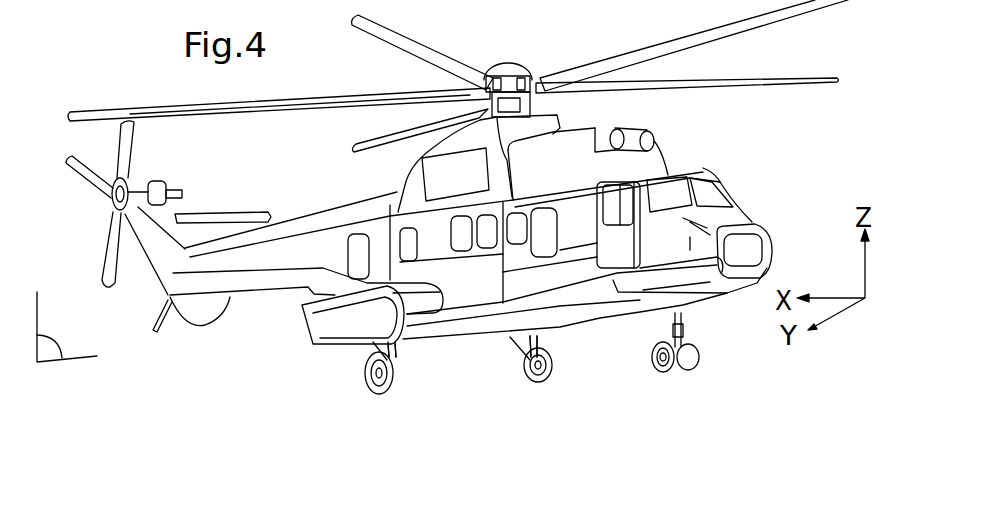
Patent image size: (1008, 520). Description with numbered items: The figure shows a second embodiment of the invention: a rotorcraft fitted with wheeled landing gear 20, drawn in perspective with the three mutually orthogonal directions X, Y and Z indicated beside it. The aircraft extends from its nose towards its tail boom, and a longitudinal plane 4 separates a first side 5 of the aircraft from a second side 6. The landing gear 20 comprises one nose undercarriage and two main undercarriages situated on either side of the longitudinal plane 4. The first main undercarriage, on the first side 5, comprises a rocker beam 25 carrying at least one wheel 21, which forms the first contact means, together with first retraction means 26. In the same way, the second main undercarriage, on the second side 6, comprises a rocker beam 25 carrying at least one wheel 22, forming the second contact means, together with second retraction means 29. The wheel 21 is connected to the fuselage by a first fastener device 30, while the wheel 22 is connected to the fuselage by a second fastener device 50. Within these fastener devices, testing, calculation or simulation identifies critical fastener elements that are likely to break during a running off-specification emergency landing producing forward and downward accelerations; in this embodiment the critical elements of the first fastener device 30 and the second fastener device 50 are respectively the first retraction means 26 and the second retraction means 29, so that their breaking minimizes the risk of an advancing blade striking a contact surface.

The longitudinal plane 4 is at (37, 312).
The first side 5 is at (780, 203).
The second side 6 is at (324, 391).
The landing gear 20 is at (632, 391).
The wheel 21 is at (548, 376).
The wheel 22 is at (387, 394).
The rocker beam 25 is at (392, 342).
The first retraction means 26 is at (512, 340).
The second retraction means 29 is at (372, 343).
The first fastener device 30 is at (514, 372).
The second fastener device 50 is at (404, 386).